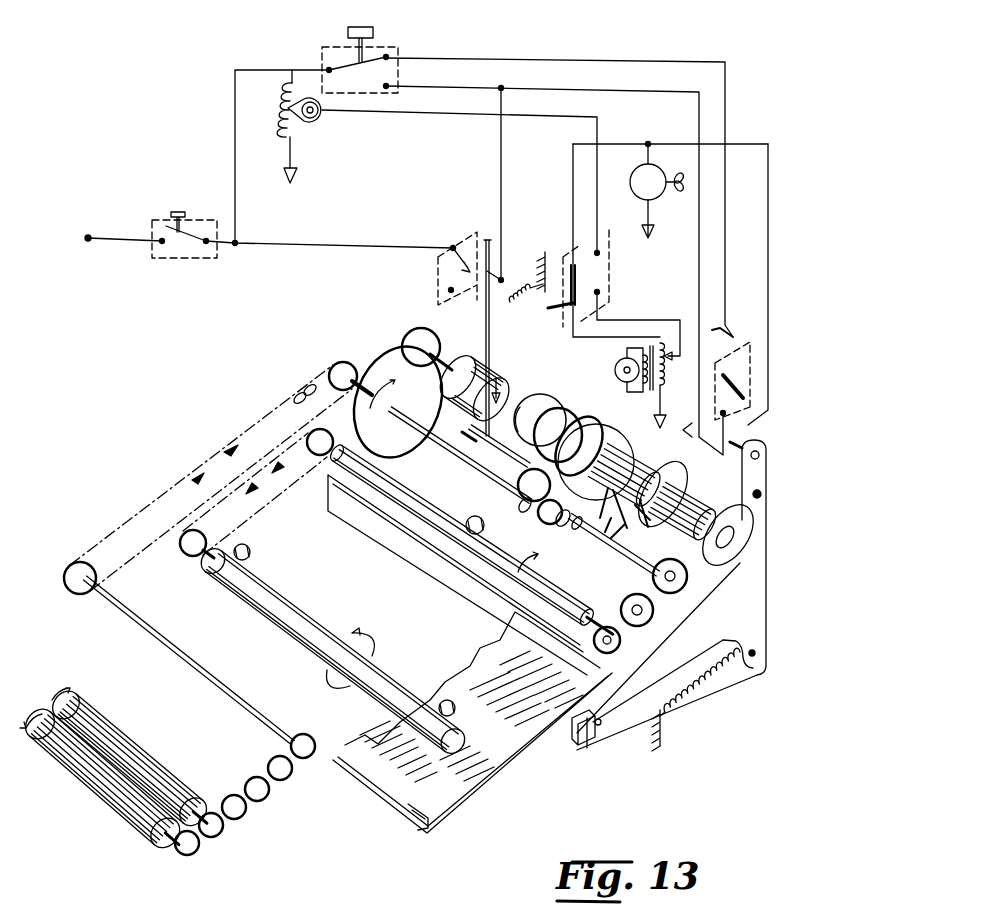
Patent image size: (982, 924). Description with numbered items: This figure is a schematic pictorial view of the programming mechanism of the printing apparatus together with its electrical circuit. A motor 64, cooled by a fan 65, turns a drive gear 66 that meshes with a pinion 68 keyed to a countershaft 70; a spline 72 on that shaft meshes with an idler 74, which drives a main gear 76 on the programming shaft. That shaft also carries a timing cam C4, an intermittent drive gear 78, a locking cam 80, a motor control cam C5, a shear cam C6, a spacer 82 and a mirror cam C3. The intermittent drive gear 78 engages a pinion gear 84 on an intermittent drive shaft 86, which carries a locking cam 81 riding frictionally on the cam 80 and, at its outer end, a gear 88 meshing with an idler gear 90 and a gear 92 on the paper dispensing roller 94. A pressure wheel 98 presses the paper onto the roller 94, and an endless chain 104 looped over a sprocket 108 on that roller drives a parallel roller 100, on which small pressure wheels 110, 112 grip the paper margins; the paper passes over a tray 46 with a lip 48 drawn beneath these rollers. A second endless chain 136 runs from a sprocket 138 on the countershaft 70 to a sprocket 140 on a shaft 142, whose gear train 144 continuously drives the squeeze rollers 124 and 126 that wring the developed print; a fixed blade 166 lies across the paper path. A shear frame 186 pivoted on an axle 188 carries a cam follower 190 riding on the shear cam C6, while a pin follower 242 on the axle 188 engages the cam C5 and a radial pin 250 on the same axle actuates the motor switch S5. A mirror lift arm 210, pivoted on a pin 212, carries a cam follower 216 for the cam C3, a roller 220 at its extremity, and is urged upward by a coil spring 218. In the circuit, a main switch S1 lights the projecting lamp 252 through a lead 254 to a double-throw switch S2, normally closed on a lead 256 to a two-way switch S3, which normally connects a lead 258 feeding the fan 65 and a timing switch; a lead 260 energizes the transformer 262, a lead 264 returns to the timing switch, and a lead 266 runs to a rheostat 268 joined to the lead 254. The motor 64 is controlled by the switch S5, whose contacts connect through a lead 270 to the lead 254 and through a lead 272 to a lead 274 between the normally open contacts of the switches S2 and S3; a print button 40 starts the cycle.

The print button 40 is at (374, 36).
The main switch S1 is at (196, 261).
The double-throw switch S2 is at (360, 65).
The two-way switch S3 is at (748, 340).
The motor control switch S5 is at (462, 232).
The lead 254 is at (235, 137).
The lead 256 is at (544, 48).
The lead 258 is at (768, 215).
The lead 260 is at (598, 339).
The transformer 262 is at (662, 372).
The lead 264 is at (639, 321).
The lead 266 is at (412, 116).
The rheostat 268 is at (295, 128).
The lead 270 is at (340, 248).
The lead 272 is at (499, 179).
The lead 274 is at (615, 80).
The fan 65 is at (650, 200).
The radially extending pin 250 is at (486, 338).
The projecting lamp 252 is at (613, 373).
The motor 64 is at (500, 372).
The drive gear 66 is at (418, 342).
The pinion 68 is at (397, 375).
The countershaft 70 is at (455, 455).
The spline 72 is at (517, 503).
The idler 74 is at (523, 478).
The main gear 76 is at (563, 415).
The intermittent drive gear 78 is at (588, 425).
The locking cam 80 is at (616, 437).
The locking cam 81 is at (559, 528).
The spacer 82 is at (695, 500).
The pinion gear 84 is at (540, 517).
The intermittent drive shaft 86 is at (625, 565).
The gear 88 is at (687, 565).
The idler gear 90 is at (653, 612).
The gear 92 is at (620, 643).
The paper dispensing roller 94 is at (570, 607).
The pressure wheel 98 is at (487, 532).
The roller 100 is at (290, 615).
The endless chain 104 is at (254, 520).
The sprocket 108 is at (319, 435).
The pressure wheel 110 is at (252, 556).
The pressure wheel 112 is at (452, 708).
The squeeze roller 124 is at (125, 750).
The squeeze roller 126 is at (85, 790).
The endless chain 136 is at (295, 394).
The sprocket 138 is at (335, 362).
The sprocket 140 is at (72, 572).
The shaft 142 is at (180, 650).
The gear train 144 is at (233, 828).
The fixed blade 166 is at (430, 573).
The shear frame 186 is at (625, 530).
The axle 188 is at (478, 437).
The cam follower 190 is at (645, 528).
The mirror lift arm 210 is at (671, 595).
The pin 212 is at (746, 440).
The cam follower 216 is at (760, 497).
The coil spring 218 is at (703, 698).
The roller 220 is at (573, 740).
The pin follower 242 is at (578, 532).
The tray 46 is at (470, 800).
The lip 48 is at (398, 818).
The mirror cam C3 is at (757, 535).
The timing cam C4 is at (540, 398).
The motor control cam C5 is at (630, 460).
The shear cam C6 is at (682, 480).